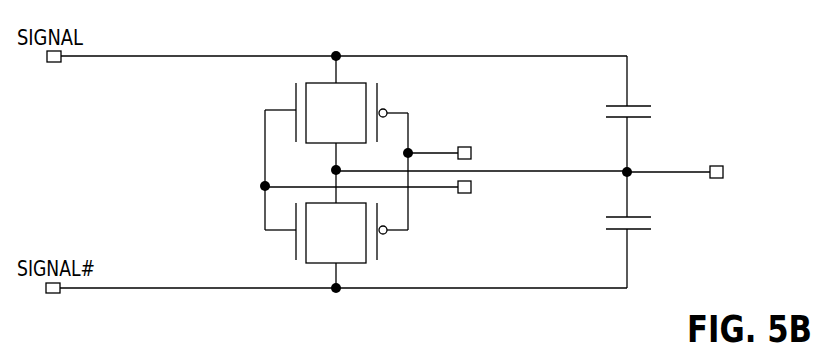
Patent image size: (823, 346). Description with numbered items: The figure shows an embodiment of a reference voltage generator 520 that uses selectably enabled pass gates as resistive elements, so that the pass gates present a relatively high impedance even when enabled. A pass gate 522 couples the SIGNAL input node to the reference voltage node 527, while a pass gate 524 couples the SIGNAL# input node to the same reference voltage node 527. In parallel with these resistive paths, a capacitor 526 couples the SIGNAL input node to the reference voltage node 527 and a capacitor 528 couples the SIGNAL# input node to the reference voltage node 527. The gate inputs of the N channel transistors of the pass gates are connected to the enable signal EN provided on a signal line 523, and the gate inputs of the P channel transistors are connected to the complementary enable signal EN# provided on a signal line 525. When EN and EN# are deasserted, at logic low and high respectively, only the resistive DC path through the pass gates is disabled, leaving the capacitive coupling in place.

The reference voltage generator 520 is at (219, 193).
The pass gate 522 is at (354, 146).
The signal line 523 is at (509, 194).
The pass gate 524 is at (354, 264).
The signal line 525 is at (538, 142).
The capacitor 526 is at (656, 113).
The reference voltage node 527 is at (800, 159).
The capacitor 528 is at (656, 225).